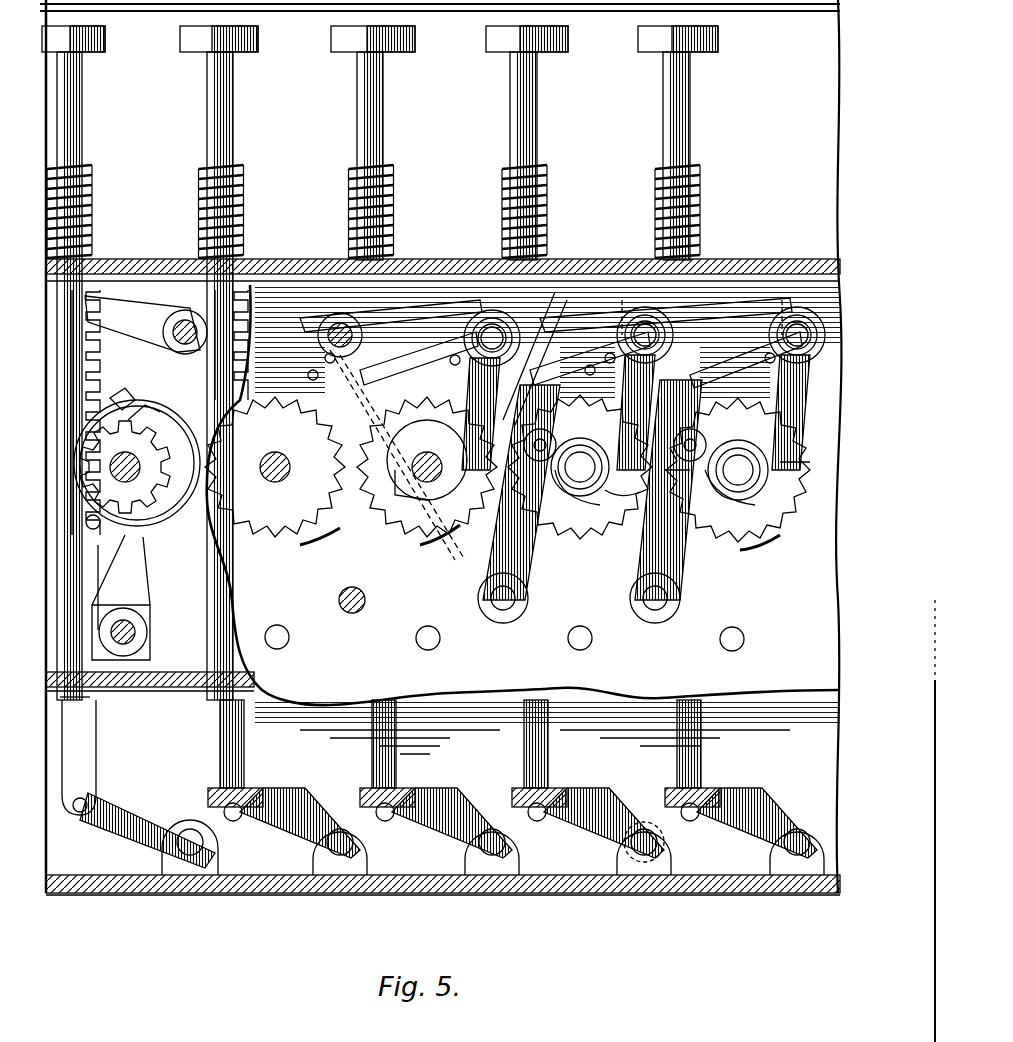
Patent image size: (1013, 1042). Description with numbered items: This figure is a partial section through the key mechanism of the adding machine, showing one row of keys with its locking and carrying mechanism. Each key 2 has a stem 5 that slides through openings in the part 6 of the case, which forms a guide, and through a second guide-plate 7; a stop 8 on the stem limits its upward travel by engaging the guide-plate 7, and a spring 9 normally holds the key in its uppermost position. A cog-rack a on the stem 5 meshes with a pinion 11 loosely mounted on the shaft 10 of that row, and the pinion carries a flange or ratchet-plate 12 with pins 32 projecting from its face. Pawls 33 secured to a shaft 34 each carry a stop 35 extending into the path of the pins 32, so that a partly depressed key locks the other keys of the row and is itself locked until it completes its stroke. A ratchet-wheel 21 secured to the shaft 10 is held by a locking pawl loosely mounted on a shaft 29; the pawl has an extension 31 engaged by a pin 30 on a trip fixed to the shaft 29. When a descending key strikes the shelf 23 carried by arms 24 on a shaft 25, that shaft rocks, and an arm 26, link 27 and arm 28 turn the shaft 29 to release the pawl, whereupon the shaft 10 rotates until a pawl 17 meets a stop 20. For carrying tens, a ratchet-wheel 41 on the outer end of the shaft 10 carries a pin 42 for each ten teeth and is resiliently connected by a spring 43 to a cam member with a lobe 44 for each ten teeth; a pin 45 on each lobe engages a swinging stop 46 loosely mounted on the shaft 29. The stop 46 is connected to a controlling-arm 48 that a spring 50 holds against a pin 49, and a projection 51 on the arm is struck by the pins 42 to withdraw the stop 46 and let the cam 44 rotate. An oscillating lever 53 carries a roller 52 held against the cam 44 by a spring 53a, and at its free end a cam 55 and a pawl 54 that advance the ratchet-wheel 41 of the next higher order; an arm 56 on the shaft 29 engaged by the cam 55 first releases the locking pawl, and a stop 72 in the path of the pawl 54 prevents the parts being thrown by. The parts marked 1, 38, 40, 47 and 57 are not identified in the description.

The frame 1 is at (487, 521).
The key 2 is at (180, 42).
The stem 5 is at (75, 150).
The part of the case 6 is at (442, 258).
The guide-plate 7 is at (178, 675).
The stop 8 is at (92, 698).
The spring 9 is at (237, 236).
The shaft 10 is at (280, 467).
The pinion 11 is at (125, 467).
The flange or ratchet-plate 12 is at (137, 476).
The pawl 17 is at (136, 415).
The stop 20 is at (118, 392).
The ratchet-wheel 21 is at (373, 467).
The shelf 23 is at (242, 790).
The arms 24 is at (448, 828).
The shaft 25 is at (354, 842).
The arm 26 is at (266, 838).
The link or rod 27 is at (86, 772).
The arm 28 is at (275, 301).
The shaft 29 is at (185, 318).
The pin 30 is at (406, 322).
The extension 31 is at (380, 302).
The pins 32 is at (96, 518).
The pawls 33 is at (130, 580).
The shaft 34 is at (137, 638).
The stop 35 is at (121, 602).
The pin 38 is at (440, 299).
The lever 40 is at (483, 376).
The ratchet-wheel 41 is at (598, 540).
The pin 42 is at (743, 504).
The spring 43 is at (735, 425).
The cam, lobe, or wing 44 is at (564, 501).
The projecting pin 45 is at (747, 526).
The swinging stop 46 is at (636, 412).
The pin 47 is at (628, 499).
The controlling-arm 48 is at (778, 373).
The stop or pin 49 is at (318, 345).
The spring 50 is at (622, 300).
The projection 51 is at (813, 511).
The roller 52 is at (615, 425).
The oscillating lever 53 is at (516, 475).
The spring 53a is at (558, 595).
The pawl 54 is at (535, 356).
The cam 55 is at (612, 302).
The arm 56 is at (564, 295).
The pin 57 is at (440, 349).
The stop 72 is at (531, 368).
The cog-rack a is at (82, 355).